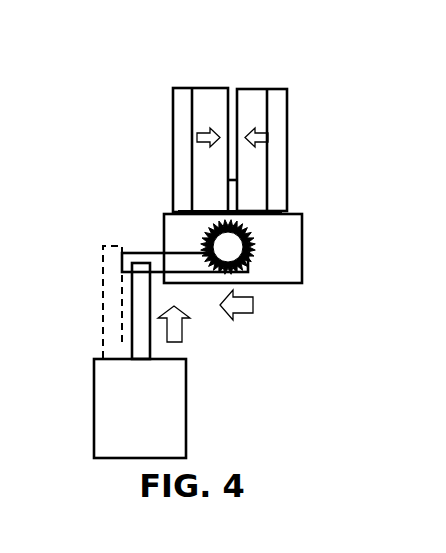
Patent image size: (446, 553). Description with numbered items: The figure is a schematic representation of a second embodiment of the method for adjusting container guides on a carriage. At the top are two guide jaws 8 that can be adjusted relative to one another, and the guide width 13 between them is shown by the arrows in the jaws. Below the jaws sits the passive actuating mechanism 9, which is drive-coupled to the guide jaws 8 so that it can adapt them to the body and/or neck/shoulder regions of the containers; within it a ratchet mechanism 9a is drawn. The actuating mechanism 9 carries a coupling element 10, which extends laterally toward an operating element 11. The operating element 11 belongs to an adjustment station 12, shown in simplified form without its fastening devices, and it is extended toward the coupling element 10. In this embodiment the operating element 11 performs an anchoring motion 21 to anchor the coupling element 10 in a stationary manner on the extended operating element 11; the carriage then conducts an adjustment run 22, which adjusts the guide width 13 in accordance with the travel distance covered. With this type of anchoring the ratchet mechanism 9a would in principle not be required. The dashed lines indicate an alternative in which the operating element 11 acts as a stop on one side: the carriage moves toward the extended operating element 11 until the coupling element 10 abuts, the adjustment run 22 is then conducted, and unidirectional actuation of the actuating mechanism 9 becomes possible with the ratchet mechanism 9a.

The guide jaws 8 is at (166, 103).
The guide width 13 is at (208, 130).
The actuating mechanism 9 is at (316, 230).
The ratchet mechanism 9a is at (233, 250).
The coupling element 10 is at (158, 262).
The operating element 11 is at (103, 272).
The adjustment station 12 is at (123, 422).
The anchoring motion 21 is at (177, 337).
The adjustment run 22 is at (242, 312).